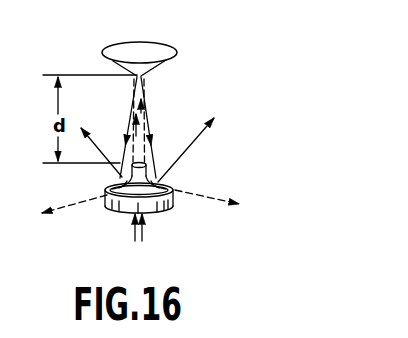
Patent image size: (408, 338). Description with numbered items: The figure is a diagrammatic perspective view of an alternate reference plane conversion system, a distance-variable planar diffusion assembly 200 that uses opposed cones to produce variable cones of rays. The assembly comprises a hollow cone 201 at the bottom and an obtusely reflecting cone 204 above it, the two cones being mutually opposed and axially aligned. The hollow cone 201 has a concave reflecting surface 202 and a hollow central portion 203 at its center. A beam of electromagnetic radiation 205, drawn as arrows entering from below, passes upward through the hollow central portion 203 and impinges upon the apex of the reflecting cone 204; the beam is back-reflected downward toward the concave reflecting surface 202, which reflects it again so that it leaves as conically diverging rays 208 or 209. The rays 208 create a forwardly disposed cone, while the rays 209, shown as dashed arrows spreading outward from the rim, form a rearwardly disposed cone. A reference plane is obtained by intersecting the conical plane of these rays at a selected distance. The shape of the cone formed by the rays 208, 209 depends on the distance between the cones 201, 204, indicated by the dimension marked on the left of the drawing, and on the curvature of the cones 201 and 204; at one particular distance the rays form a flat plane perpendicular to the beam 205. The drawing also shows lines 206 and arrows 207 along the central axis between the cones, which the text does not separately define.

The distance-variable planar diffusion assembly 200 is at (226, 93).
The hollow cone 201 is at (175, 206).
The concave reflecting surface 202 is at (127, 192).
The hollow central portion 203 is at (148, 165).
The obtusely reflecting cone 204 is at (174, 61).
The beam of electromagnetic radiation 205 is at (143, 237).
The jet stream boundary 206 is at (145, 121).
The upward jet flow 207 is at (147, 103).
The conically diverging rays (forward cone) 208 is at (120, 180).
The conically diverging rays (rearward cone) 209 is at (218, 192).